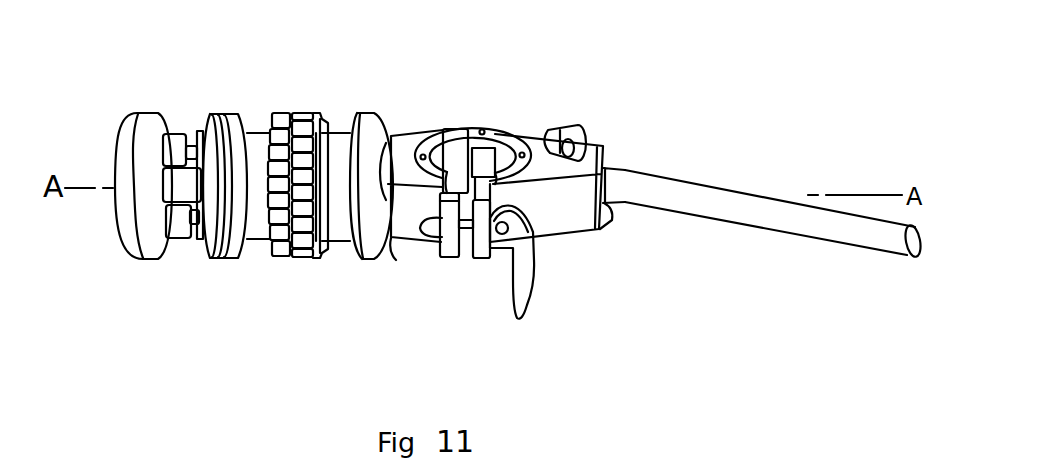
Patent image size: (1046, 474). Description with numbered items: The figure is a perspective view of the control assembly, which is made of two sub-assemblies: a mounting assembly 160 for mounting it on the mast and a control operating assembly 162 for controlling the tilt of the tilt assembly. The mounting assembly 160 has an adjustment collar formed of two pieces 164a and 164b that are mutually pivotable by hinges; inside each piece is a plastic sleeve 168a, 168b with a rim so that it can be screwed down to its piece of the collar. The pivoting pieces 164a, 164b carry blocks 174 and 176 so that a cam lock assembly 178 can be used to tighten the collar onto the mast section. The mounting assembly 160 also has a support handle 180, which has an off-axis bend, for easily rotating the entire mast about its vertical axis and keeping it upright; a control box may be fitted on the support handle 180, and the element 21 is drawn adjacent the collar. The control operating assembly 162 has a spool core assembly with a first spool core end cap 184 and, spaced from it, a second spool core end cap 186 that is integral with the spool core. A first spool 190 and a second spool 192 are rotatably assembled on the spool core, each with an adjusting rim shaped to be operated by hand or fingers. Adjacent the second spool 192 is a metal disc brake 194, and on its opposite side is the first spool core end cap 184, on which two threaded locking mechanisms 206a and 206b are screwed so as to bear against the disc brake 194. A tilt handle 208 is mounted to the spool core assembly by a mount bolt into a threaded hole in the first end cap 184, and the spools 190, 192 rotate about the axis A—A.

The control operating assembly 162 is at (383, 351).
The mounting assembly 160 is at (603, 352).
The tilt handle 208 is at (143, 112).
The threaded locking mechanism 206a is at (183, 132).
The threaded locking mechanism 206b is at (188, 240).
The first spool core end cap 184 is at (218, 112).
The metal disc brake 194 is at (250, 130).
The second spool 192 is at (264, 132).
The first spool 190 is at (340, 133).
The second spool core end cap 186 is at (382, 132).
The adjustment collar piece 164a is at (402, 242).
The adjustment collar piece 164b is at (610, 215).
The plastic sleeve 168a is at (440, 130).
The plastic sleeve 168b is at (527, 132).
The block 174 is at (447, 258).
The block 176 is at (487, 260).
The cam lock assembly 178 is at (537, 292).
The knob 21 is at (583, 124).
The support handle 180 is at (880, 255).